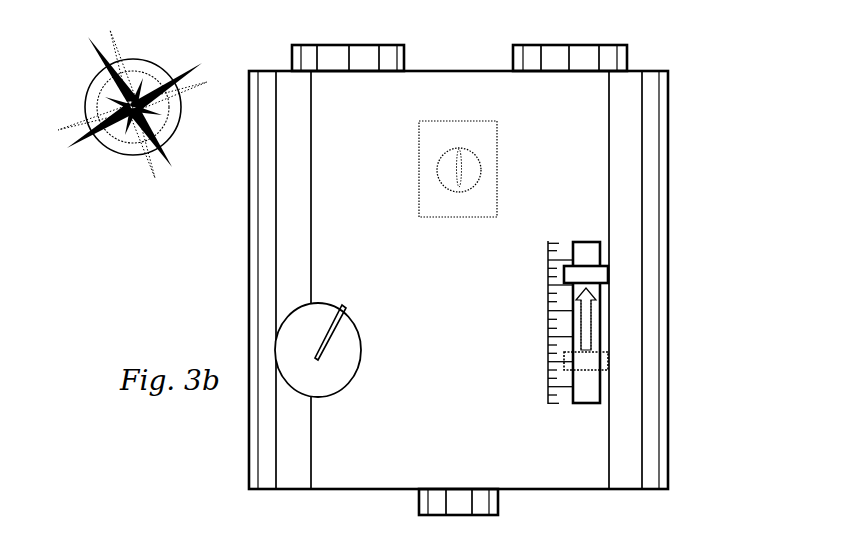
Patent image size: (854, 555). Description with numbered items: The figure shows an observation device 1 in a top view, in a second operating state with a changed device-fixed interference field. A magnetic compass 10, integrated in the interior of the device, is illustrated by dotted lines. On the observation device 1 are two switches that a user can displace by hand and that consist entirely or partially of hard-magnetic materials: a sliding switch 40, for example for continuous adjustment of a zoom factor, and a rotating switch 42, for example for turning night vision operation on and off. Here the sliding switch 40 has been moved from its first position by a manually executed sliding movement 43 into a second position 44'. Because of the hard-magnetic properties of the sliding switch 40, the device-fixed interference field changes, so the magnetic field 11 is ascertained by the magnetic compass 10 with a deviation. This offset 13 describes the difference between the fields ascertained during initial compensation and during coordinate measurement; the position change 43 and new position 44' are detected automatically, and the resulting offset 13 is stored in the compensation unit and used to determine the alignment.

The observation device 1 is at (690, 97).
The magnetic compass 10 is at (452, 150).
The magnetic field 11 is at (187, 27).
The offset 13 is at (105, 23).
The sliding switch 40 is at (530, 359).
The rotating switch 42 is at (352, 370).
The sliding movement 43 is at (586, 320).
The second position 44' is at (547, 318).